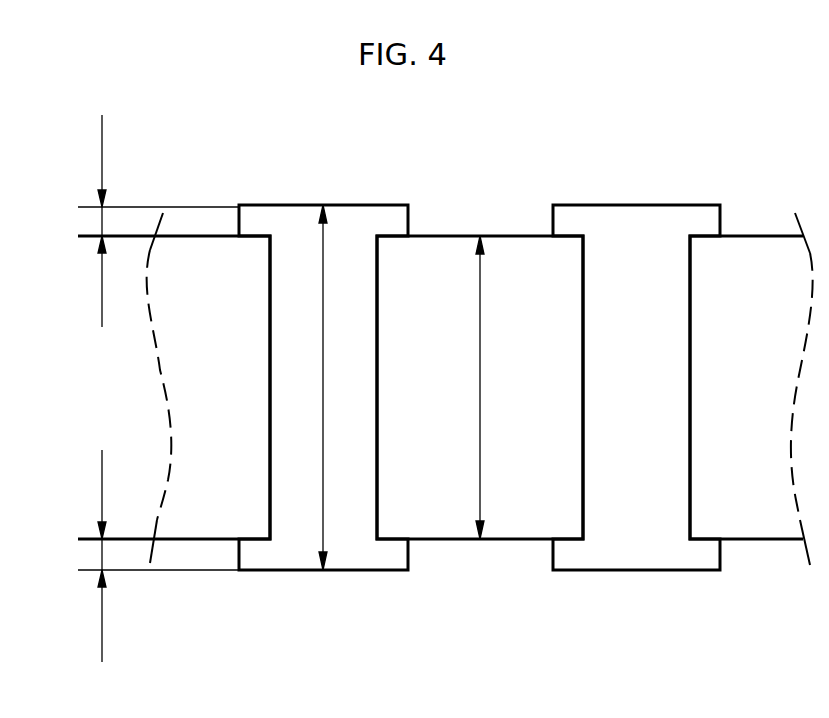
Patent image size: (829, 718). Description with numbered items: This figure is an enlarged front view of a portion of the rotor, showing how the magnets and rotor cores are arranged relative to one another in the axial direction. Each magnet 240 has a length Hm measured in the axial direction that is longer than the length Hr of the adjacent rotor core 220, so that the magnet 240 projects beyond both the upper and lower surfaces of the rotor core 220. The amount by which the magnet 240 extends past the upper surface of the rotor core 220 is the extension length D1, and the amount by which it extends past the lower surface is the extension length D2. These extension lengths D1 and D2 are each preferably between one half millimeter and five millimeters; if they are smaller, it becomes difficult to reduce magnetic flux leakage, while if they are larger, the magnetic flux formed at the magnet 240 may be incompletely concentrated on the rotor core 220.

The magnet 240 is at (287, 525).
The rotor core 220 is at (440, 525).
The extension length D1 is at (139, 221).
The extension length D2 is at (139, 556).
The length of magnet Hm is at (342, 387).
The length of rotor core Hr is at (498, 387).